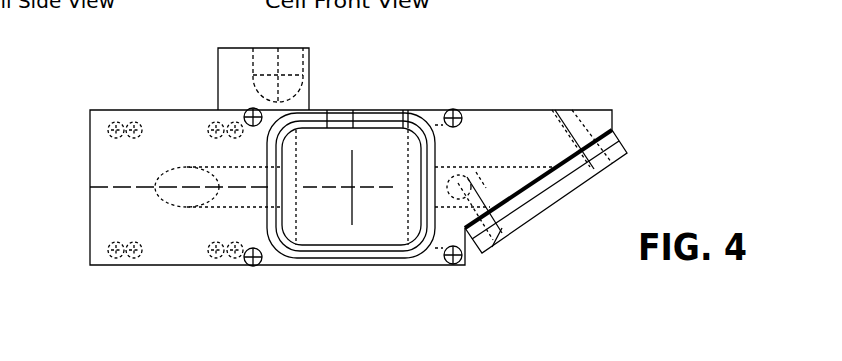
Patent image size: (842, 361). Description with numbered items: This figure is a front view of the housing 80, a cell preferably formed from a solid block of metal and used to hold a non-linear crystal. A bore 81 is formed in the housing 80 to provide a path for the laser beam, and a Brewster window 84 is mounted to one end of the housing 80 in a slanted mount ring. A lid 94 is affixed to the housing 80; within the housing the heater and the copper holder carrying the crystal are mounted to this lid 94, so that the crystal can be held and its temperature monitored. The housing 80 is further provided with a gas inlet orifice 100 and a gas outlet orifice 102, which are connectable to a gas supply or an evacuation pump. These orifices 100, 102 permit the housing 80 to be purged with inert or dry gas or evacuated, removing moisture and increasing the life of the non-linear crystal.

The housing 80 is at (82, 212).
The bore 81 is at (186, 178).
The Brewster window 84 is at (483, 248).
The lid 94 is at (378, 155).
The gas inlet orifice 100 is at (340, 110).
The gas outlet orifice 102 is at (402, 142).